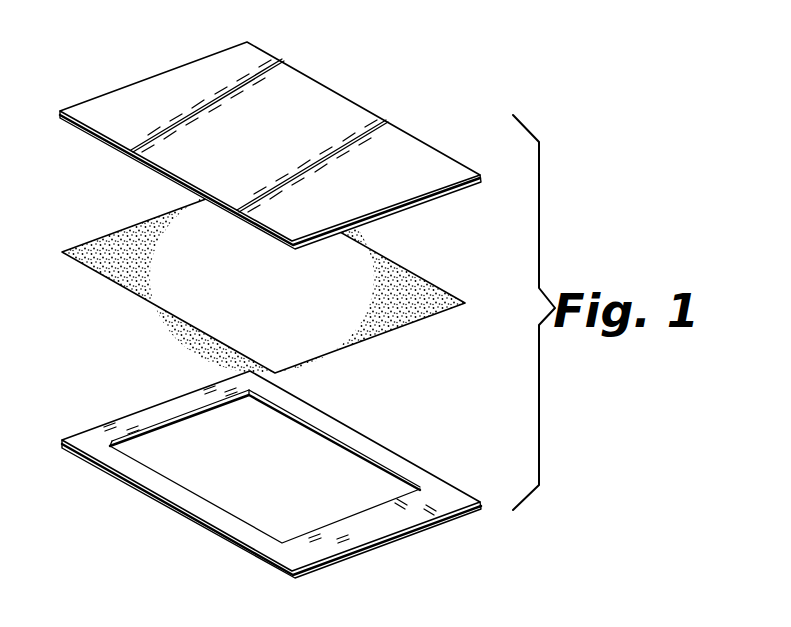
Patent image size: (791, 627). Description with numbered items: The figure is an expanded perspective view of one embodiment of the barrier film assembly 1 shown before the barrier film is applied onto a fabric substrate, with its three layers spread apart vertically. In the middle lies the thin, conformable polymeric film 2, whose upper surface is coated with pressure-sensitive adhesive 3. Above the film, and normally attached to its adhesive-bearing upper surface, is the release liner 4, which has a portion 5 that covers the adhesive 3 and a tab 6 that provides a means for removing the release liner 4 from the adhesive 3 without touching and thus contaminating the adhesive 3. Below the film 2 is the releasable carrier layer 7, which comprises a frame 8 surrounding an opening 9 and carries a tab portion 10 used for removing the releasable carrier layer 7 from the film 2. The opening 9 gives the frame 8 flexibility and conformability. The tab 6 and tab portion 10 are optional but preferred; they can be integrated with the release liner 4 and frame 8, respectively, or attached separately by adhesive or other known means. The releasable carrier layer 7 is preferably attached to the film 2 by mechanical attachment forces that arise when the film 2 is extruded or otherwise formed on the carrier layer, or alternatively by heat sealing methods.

The barrier film assembly 1 is at (290, 26).
The polymeric film 2 is at (104, 276).
The pressure-sensitive adhesive 3 is at (94, 248).
The release liner 4 is at (334, 80).
The portion 5 is at (414, 156).
The tab 6 is at (468, 175).
The releasable carrier layer 7 is at (131, 402).
The frame 8 is at (340, 428).
The opening 9 is at (378, 468).
The tab portion 10 is at (465, 498).